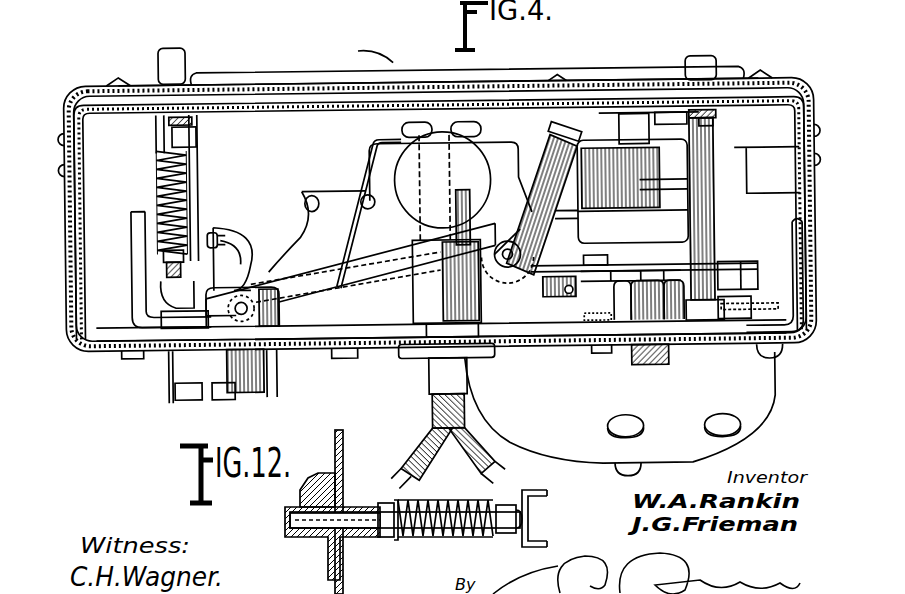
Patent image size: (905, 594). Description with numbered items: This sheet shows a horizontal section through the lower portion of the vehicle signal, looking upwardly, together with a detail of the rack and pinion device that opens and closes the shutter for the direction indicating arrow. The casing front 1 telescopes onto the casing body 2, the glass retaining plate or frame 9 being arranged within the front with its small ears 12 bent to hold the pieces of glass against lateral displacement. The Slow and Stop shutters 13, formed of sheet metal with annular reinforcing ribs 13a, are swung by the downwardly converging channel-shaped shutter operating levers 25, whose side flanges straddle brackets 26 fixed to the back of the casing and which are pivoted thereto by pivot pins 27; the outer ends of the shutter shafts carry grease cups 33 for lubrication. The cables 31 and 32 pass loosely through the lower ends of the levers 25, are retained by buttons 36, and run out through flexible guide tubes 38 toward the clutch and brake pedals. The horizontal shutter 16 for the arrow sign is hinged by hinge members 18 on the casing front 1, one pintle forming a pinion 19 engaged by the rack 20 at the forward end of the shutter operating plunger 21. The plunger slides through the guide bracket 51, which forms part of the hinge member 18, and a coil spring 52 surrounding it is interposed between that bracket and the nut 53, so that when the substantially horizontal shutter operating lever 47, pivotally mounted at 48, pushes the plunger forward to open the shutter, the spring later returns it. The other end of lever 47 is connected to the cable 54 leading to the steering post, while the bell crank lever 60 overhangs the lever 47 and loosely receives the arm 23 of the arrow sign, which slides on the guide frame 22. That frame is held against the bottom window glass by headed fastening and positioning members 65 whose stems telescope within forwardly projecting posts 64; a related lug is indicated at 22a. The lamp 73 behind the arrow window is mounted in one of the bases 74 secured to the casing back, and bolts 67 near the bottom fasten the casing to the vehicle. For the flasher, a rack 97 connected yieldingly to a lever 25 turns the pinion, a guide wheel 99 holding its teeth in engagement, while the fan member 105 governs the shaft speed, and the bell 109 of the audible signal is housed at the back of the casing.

In FIG. 12, the casing front 1 is at (335, 448).
In FIG. 4, the casing body 2 is at (728, 354).
In FIG. 4, the glass retaining plate or frame 9 is at (610, 124).
In FIG. 4, the ears 12 is at (150, 128).
In FIG. 4, the shutters 13 is at (284, 82).
In FIG. 4, the annular reinforcing ribs 13a is at (778, 66).
In FIG. 4, the shutter 16 is at (415, 122).
In FIG. 4, the hinge members 18 is at (152, 60).
In FIG. 12, the hinge members 18 is at (330, 550).
In FIG. 12, the pinion 19 is at (308, 494).
In FIG. 12, the rack 20 is at (356, 522).
In FIG. 4, the shutter operating plunger 21 is at (165, 270).
In FIG. 12, the shutter operating plunger 21 is at (514, 530).
In FIG. 4, the guide frame 22 is at (656, 115).
In FIG. 4, the bracket lug 22a is at (690, 121).
In FIG. 4, the arm 23 is at (540, 108).
In FIG. 4, the shutter operating levers 25 is at (522, 172).
In FIG. 4, the brackets 26 is at (364, 240).
In FIG. 4, the pivot pins 27 is at (362, 200).
In FIG. 4, the cable 31 is at (350, 269).
In FIG. 4, the cable 32 is at (470, 255).
In FIG. 4, the grease cups 33 is at (350, 0).
In FIG. 4, the buttons 36 is at (466, 122).
In FIG. 4, the flexible guide tubes 38 is at (430, 418).
In FIG. 4, the shutter operating lever 47 is at (298, 280).
In FIG. 4, the pivot 48 is at (236, 288).
In FIG. 12, the guide bracket 51 is at (386, 502).
In FIG. 4, the coil spring 52 is at (162, 192).
In FIG. 12, the coil spring 52 is at (478, 498).
In FIG. 4, the nut 53 is at (163, 256).
In FIG. 12, the nut 53 is at (534, 500).
In FIG. 4, the cable 54 is at (440, 262).
In FIG. 4, the bell crank lever 60 is at (543, 198).
In FIG. 4, the posts 64 is at (190, 294).
In FIG. 4, the headed fastening and positioning members 65 is at (170, 120).
In FIG. 4, the bolts 67 is at (245, 390).
In FIG. 4, the lamp 73 is at (442, 188).
In FIG. 4, the bases 74 is at (494, 348).
In FIG. 4, the rack 97 is at (554, 318).
In FIG. 4, the guide wheel 99 is at (600, 285).
In FIG. 4, the fan member 105 is at (738, 162).
In FIG. 4, the bell 109 is at (748, 402).